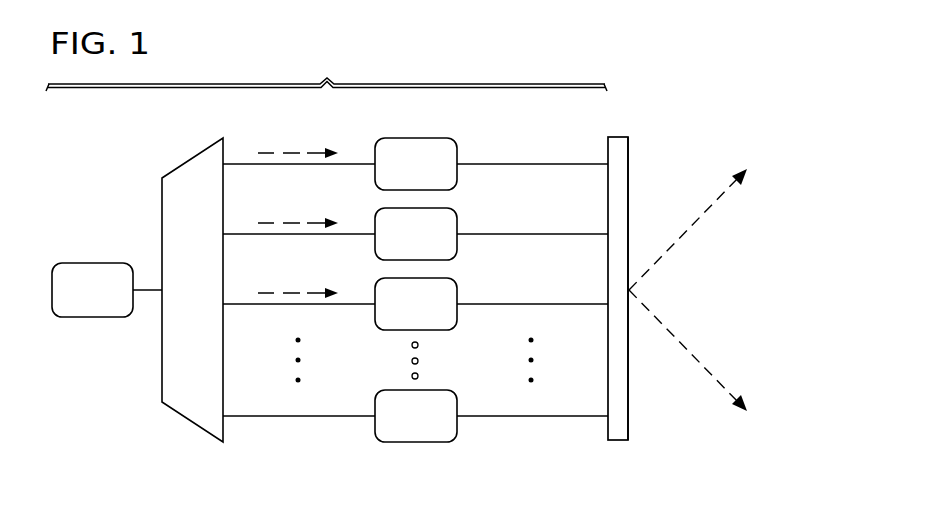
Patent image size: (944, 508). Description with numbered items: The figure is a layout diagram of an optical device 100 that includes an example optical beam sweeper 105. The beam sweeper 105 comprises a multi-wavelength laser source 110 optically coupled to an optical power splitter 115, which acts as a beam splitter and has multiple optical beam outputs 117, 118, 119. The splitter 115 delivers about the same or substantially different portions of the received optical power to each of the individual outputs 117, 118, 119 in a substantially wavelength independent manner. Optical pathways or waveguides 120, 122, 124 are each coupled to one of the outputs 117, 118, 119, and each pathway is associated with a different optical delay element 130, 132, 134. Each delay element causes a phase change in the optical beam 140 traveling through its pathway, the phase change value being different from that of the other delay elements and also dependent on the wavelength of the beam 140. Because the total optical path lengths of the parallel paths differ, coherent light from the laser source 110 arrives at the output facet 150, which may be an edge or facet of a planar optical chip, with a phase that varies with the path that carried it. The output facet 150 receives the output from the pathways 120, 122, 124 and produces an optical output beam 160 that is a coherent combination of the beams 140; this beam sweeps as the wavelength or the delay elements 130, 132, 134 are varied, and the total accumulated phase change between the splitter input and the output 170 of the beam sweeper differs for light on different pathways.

The device 100 is at (712, 56).
The optical beam sweeper 105 is at (326, 69).
The multi-wavelength laser source 110 is at (112, 300).
The optical power splitter 115 is at (212, 300).
The optical beam output 117 is at (226, 161).
The optical beam output 118 is at (226, 231).
The optical beam output 119 is at (227, 308).
The optical pathway 120 is at (530, 162).
The optical pathway 122 is at (530, 232).
The optical pathway 124 is at (530, 302).
The optical delay element 130 is at (434, 177).
The optical delay element 132 is at (434, 247).
The optical delay element 134 is at (434, 317).
The optical beam 140 is at (289, 153).
The output facet 150 is at (620, 124).
The optical output beam 160 is at (682, 234).
The output of the beam sweeper 170 is at (629, 187).